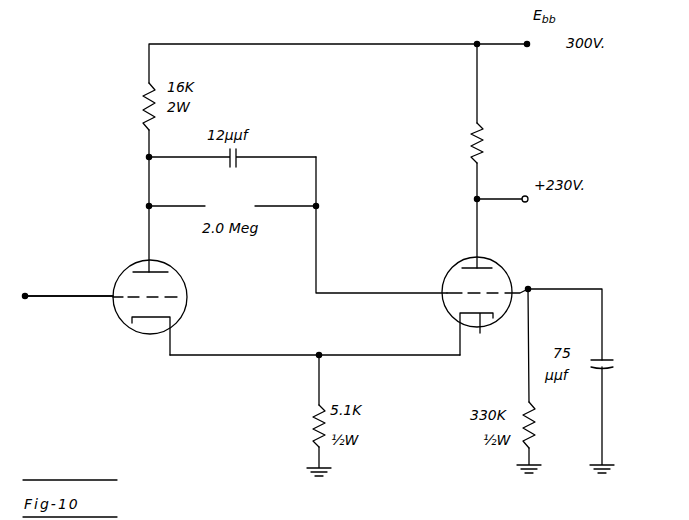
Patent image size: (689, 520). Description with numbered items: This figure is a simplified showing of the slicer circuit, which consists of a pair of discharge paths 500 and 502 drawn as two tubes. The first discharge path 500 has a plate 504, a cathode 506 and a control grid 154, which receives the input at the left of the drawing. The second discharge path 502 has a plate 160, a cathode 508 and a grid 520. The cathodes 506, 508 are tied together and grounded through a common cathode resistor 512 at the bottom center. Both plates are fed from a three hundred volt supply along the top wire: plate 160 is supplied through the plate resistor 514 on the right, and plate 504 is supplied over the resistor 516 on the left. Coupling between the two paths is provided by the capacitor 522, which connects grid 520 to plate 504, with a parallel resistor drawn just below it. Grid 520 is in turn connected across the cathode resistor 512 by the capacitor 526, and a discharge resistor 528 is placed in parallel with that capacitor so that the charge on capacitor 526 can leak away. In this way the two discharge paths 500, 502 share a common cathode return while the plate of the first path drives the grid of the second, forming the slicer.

The resistor 516 is at (147, 118).
The plate resistor 514 is at (472, 143).
The capacitor 522 is at (242, 150).
The common cathode resistor 512 is at (313, 425).
The discharge resistor 528 is at (536, 420).
The capacitor 526 is at (608, 366).
The discharge path 500 is at (124, 270).
The plate 504 is at (152, 274).
The cathode 506 is at (145, 313).
The control grid 154 is at (130, 296).
The discharge path 502 is at (511, 276).
The plate 160 is at (481, 267).
The grid 520 is at (456, 299).
The cathode 508 is at (480, 334).